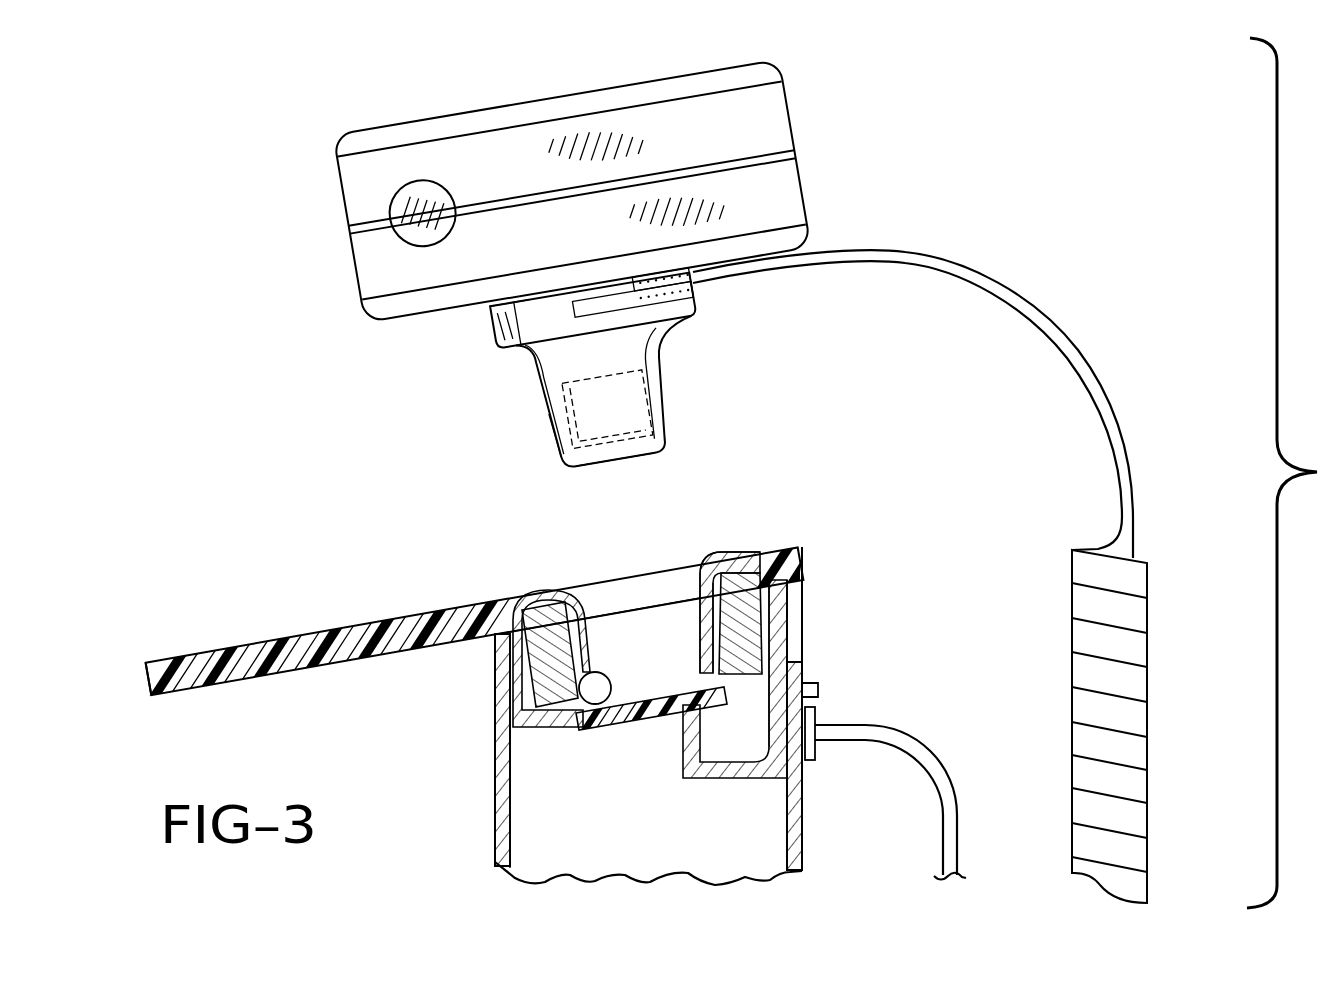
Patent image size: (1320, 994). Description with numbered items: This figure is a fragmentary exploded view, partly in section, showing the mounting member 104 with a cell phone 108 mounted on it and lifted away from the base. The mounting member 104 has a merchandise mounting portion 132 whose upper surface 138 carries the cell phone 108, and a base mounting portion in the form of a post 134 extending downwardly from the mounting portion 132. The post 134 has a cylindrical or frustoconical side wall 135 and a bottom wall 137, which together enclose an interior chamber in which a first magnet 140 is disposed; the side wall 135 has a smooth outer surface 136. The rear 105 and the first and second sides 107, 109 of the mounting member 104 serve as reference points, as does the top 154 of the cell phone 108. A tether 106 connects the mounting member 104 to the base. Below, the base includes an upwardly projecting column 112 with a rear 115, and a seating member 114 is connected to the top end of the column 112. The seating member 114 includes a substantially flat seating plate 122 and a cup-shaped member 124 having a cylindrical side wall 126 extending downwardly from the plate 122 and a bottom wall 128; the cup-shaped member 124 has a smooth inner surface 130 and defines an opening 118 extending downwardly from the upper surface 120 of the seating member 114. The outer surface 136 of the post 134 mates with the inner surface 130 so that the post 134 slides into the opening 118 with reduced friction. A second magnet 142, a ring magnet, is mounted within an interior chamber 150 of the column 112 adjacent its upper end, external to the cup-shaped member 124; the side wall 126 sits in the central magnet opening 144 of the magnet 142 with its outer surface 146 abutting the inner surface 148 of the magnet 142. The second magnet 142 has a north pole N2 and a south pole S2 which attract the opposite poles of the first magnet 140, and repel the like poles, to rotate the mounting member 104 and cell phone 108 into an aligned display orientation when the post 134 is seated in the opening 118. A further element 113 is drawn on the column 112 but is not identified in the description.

The top of cell phone 154 is at (510, 150).
The cell phone 108 is at (793, 103).
The tether 106 is at (1037, 296).
The upper surface of mounting portion 138 is at (522, 299).
The rear of mounting member 105 is at (588, 297).
The second side of mounting member 109 is at (488, 315).
The first side of mounting member 107 is at (697, 302).
The merchandise mounting portion 132 is at (487, 331).
The side wall of post 135 is at (664, 374).
The mounting member 104 is at (534, 365).
The first magnet 140 is at (639, 415).
The post 134 is at (546, 408).
The outer surface of post side wall 136 is at (556, 440).
The bottom wall of post 137 is at (627, 459).
The second magnet 142 is at (736, 570).
The seating member 114 is at (776, 547).
The inner surface of cup-shaped member 130 is at (590, 625).
The opening 118 is at (645, 632).
The inner surface of second magnet 148 is at (582, 597).
The interior chamber of column 150 is at (765, 604).
The seating plate 122 is at (272, 631).
The upper surface of seating member 120 is at (378, 618).
The north pole of second magnet N2 is at (782, 613).
The side wall of cup-shaped member 126 is at (725, 628).
The outer surface of cup side wall 146 is at (734, 645).
The south pole of second magnet S2 is at (529, 689).
The central magnet opening 144 is at (592, 700).
The bottom wall of cup-shaped member 128 is at (628, 727).
The cup-shaped member 124 is at (724, 709).
The column 112 is at (494, 800).
The housing wall 113 is at (496, 837).
The rear of column 115 is at (806, 834).